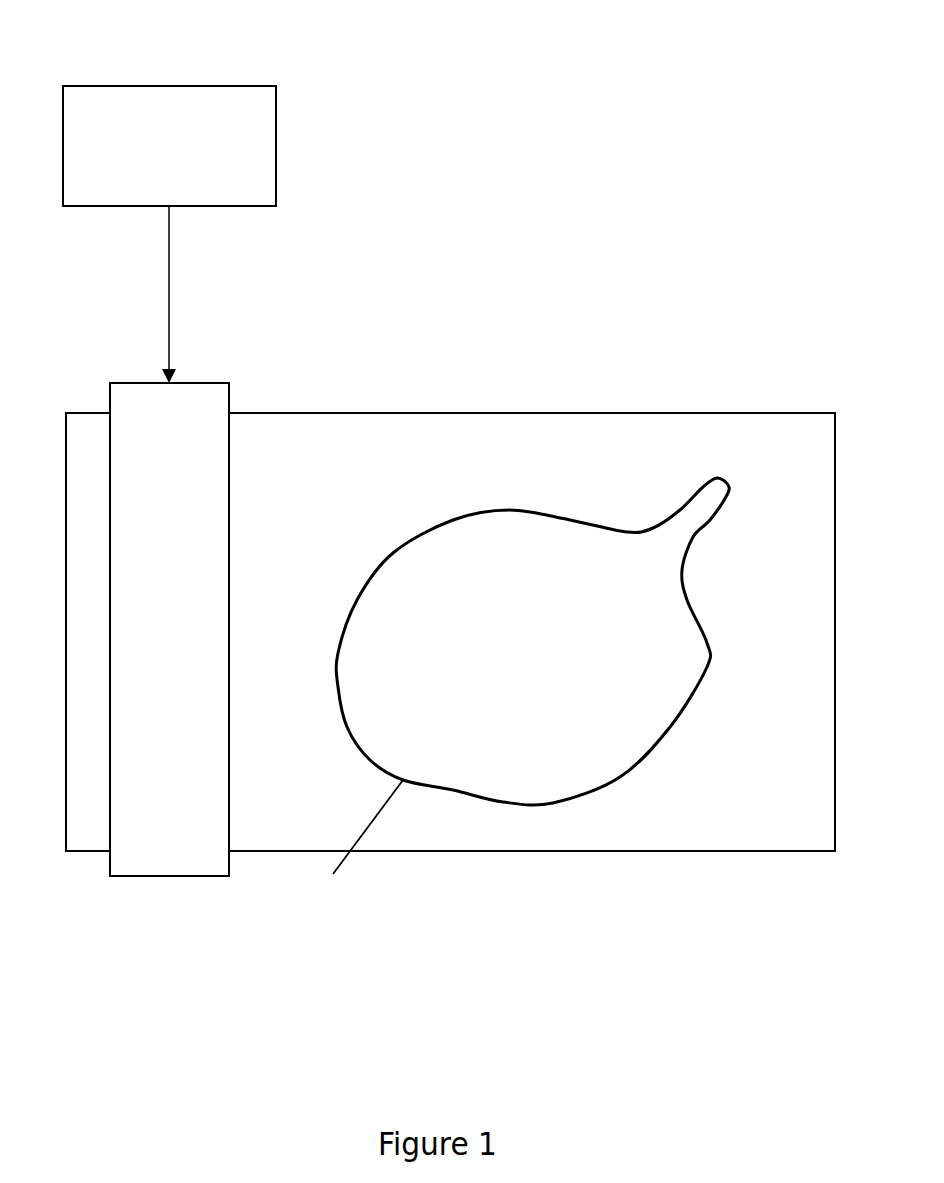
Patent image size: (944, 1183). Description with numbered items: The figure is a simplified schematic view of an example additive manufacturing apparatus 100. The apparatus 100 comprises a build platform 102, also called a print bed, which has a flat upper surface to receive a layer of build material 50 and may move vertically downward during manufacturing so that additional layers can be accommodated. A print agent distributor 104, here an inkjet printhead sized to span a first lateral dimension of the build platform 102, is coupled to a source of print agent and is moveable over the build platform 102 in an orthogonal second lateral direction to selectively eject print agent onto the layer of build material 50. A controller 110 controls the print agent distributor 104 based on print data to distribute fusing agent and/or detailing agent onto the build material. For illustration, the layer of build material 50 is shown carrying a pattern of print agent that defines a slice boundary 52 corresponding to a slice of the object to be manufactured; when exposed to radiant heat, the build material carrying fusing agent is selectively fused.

The additive manufacturing apparatus 100 is at (589, 50).
The build platform 102 is at (603, 413).
The print agent distributor 104 is at (203, 383).
The controller 110 is at (237, 86).
The layer of build material 50 is at (725, 449).
The slice boundary 52 is at (333, 874).